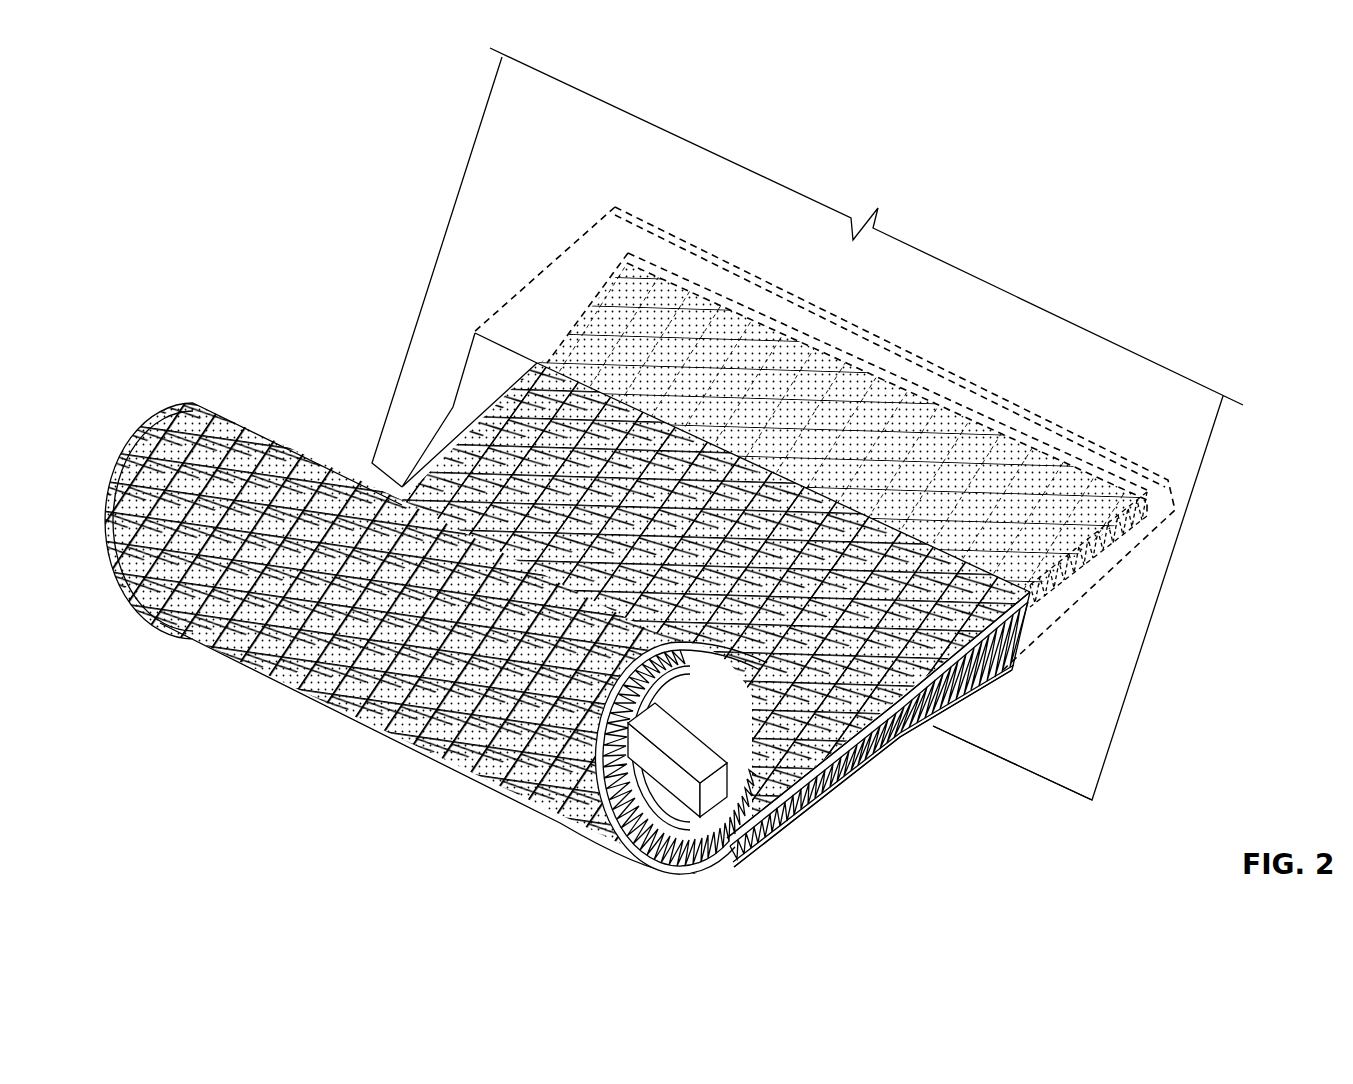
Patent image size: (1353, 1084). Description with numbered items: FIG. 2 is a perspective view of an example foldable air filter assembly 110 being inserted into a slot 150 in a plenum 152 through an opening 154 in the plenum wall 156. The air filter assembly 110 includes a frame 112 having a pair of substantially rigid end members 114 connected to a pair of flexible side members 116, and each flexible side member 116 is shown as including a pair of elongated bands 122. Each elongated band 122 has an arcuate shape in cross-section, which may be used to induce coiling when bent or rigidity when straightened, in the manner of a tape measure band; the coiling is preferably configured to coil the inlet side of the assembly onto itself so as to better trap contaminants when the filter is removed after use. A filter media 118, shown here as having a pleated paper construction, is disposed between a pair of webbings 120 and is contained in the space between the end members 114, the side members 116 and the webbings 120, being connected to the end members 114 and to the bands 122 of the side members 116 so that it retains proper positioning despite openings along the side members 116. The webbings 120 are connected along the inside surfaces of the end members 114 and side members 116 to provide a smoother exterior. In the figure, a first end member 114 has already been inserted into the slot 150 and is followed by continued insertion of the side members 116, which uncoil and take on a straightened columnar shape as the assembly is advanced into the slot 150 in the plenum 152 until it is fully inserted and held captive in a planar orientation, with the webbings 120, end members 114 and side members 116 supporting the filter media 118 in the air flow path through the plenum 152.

The air filter assembly 110 is at (170, 754).
The frame 112 is at (908, 748).
The end members 114 is at (1093, 456).
The flexible side members 116 is at (813, 821).
The filter media 118 is at (903, 747).
The webbings 120 is at (793, 827).
The elongated bands 122 is at (623, 853).
The slot 150 is at (1000, 663).
The plenum 152 is at (1138, 696).
The opening 154 is at (1015, 660).
The plenum wall 156 is at (1085, 773).